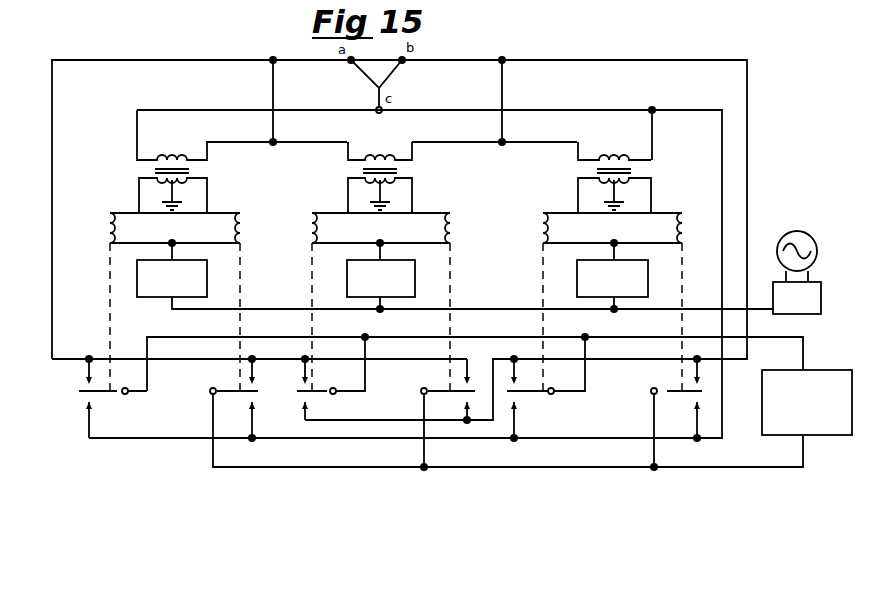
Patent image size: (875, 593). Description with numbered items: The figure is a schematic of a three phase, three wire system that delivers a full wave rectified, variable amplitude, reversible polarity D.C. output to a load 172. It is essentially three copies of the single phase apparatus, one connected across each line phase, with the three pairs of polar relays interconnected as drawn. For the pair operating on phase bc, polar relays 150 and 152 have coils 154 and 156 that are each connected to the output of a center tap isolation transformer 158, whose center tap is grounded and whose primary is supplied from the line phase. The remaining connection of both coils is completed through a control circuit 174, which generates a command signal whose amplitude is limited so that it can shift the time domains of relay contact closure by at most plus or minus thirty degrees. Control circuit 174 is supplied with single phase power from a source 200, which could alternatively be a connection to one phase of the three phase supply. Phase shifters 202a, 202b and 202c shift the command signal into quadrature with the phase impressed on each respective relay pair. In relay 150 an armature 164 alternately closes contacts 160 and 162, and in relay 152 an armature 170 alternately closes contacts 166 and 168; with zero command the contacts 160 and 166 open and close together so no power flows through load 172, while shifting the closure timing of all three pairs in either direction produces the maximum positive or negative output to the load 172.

The polar relay 150 is at (544, 210).
The polar relay 152 is at (681, 207).
The relay coil 154 is at (549, 226).
The relay coil 156 is at (684, 232).
The center tap isolation transformer 158 is at (640, 170).
The relay contact 160 is at (506, 373).
The relay contact 162 is at (517, 417).
The armature 164 is at (527, 392).
The relay contact 166 is at (701, 370).
The relay contact 168 is at (697, 422).
The armature 170 is at (668, 377).
The load 172 is at (808, 436).
The control circuit 174 is at (803, 314).
The single phase source 200 is at (808, 232).
The phase shifter 202a is at (137, 275).
The phase shifter 202b is at (347, 275).
The phase shifter 202c is at (577, 271).